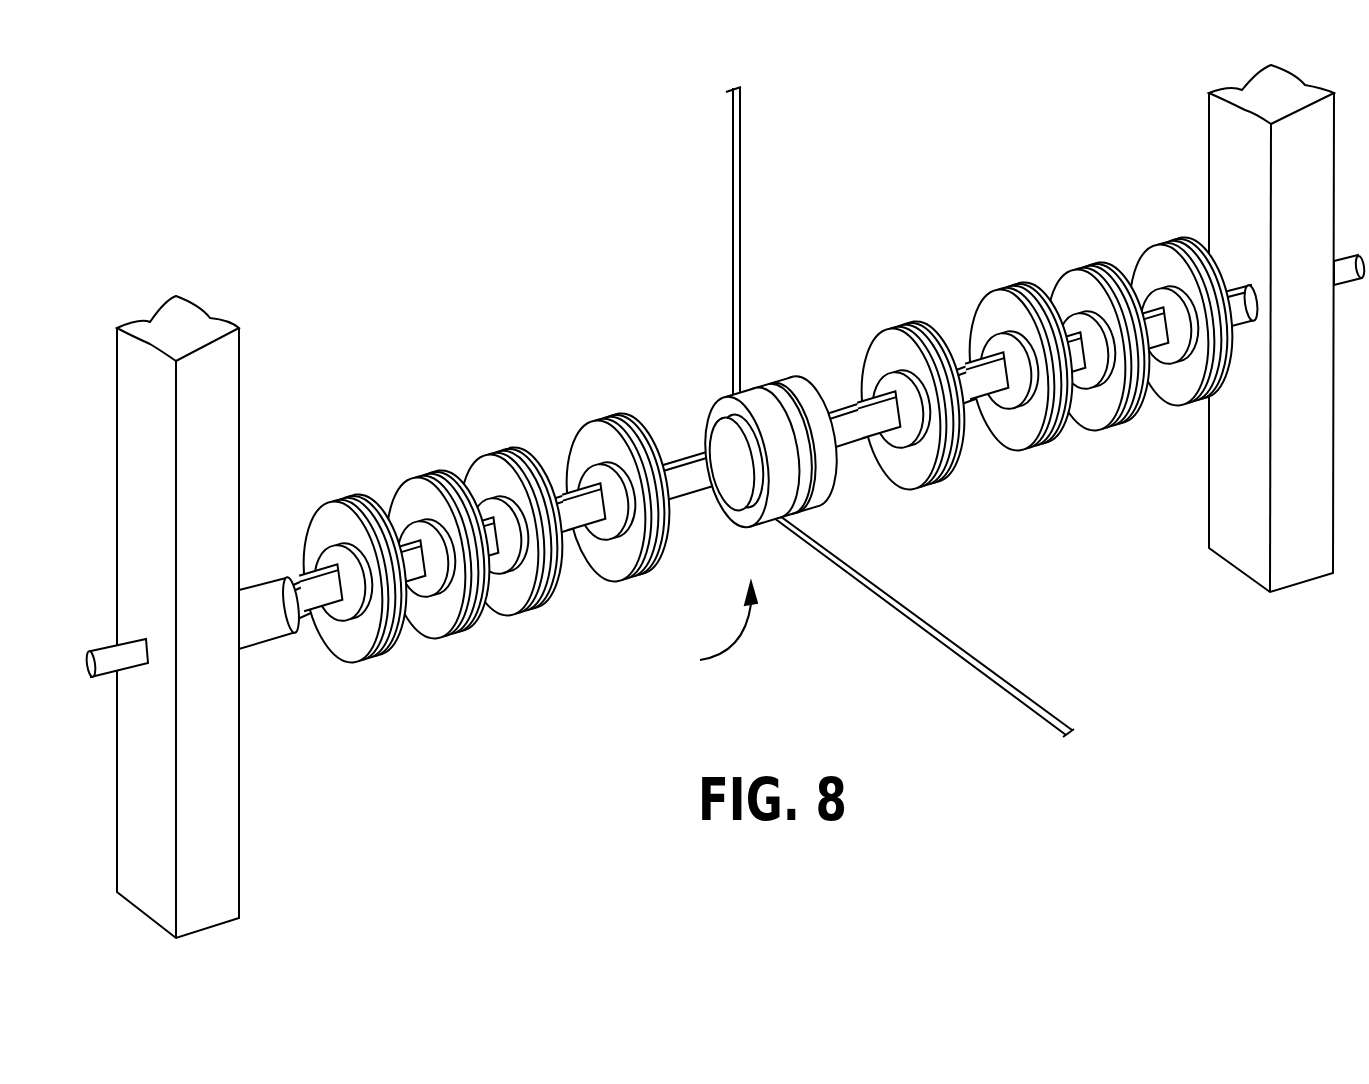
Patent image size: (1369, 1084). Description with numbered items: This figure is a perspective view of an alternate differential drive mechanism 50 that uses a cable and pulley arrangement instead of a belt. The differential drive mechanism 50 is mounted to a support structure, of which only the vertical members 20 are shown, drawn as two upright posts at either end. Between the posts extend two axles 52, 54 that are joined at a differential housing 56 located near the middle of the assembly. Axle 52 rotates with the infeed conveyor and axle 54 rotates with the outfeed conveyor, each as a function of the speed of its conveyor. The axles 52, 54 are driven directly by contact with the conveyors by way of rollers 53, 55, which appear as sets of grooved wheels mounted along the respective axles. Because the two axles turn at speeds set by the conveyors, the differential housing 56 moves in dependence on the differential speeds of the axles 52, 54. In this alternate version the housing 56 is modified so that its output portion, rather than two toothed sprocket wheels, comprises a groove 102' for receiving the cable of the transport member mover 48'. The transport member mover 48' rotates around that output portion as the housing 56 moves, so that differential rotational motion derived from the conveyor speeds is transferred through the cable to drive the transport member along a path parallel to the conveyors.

The vertical member 20 is at (214, 795).
The transport member mover 48' is at (849, 412).
The differential drive mechanism 50 is at (698, 631).
The axle 52 is at (131, 657).
The roller 53 is at (400, 477).
The axle 54 is at (1242, 313).
The roller 55 is at (993, 290).
The differential housing 56 is at (823, 482).
The groove 102' is at (821, 421).